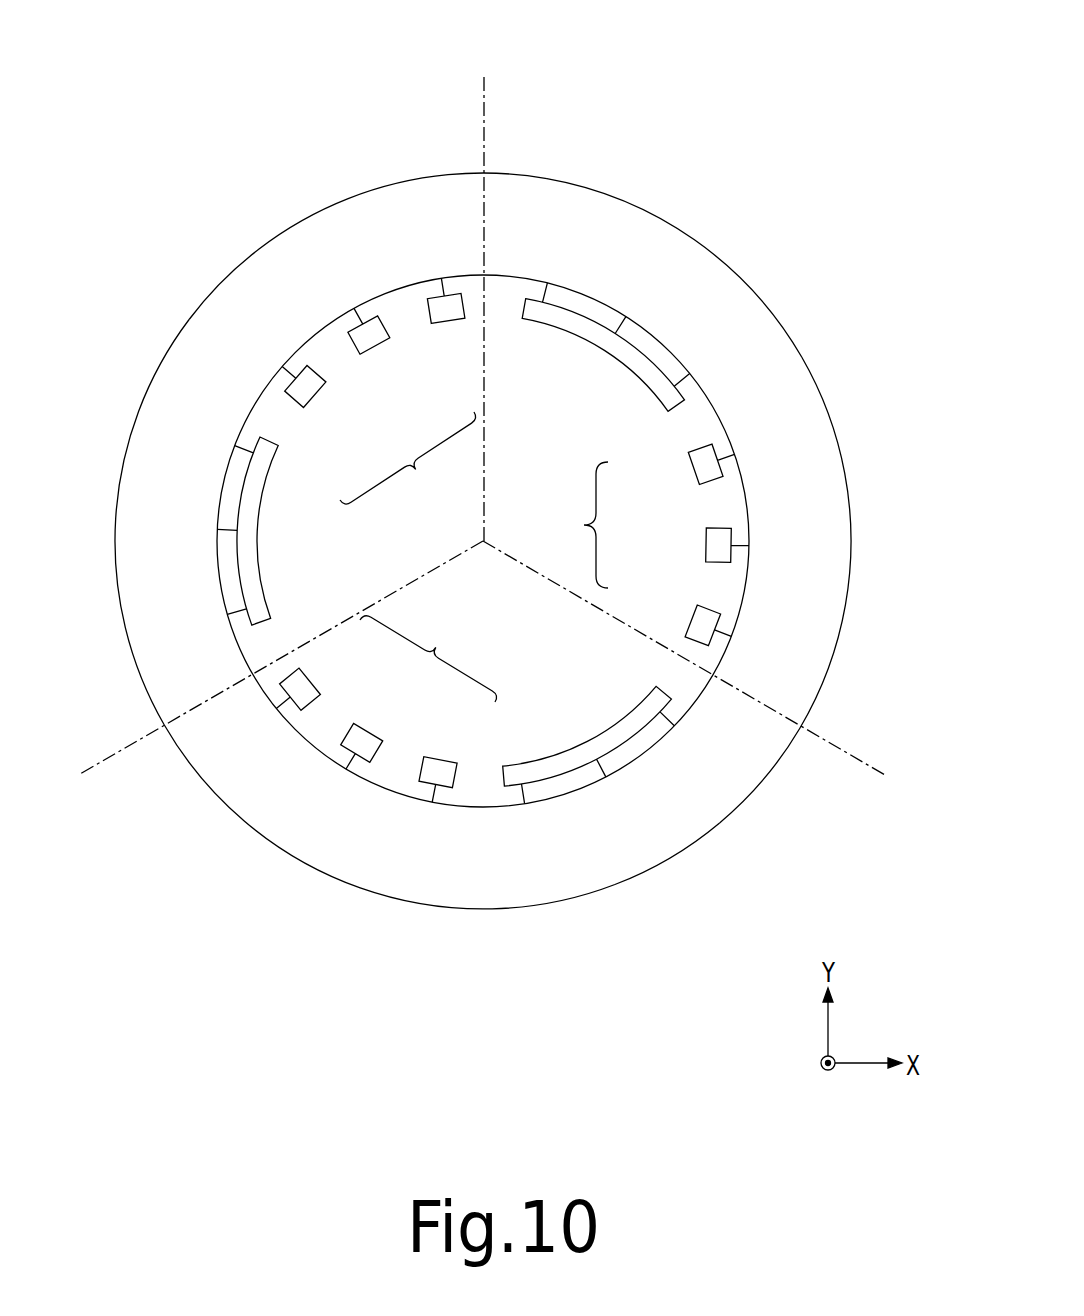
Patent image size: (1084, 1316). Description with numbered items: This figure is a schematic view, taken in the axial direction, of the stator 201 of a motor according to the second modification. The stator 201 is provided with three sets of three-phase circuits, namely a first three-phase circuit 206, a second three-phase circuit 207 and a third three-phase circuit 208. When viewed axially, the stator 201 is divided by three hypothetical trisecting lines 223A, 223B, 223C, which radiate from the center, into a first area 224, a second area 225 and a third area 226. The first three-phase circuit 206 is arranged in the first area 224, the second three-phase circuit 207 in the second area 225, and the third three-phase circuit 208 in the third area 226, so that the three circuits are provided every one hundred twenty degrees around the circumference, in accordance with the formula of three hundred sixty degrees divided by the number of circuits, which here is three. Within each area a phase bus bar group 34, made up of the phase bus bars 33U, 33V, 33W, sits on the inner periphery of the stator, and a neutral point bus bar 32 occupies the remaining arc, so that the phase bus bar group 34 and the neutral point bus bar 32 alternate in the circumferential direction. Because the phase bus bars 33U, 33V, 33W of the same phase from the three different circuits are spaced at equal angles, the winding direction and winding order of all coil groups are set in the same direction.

The stator 201 is at (780, 118).
The first three-phase circuit 206 is at (828, 395).
The second three-phase circuit 207 is at (655, 883).
The third three-phase circuit 208 is at (158, 332).
The first area 224 is at (792, 317).
The second area 225 is at (575, 910).
The third area 226 is at (197, 280).
The hypothetical trisecting line 223A is at (485, 118).
The hypothetical trisecting line 223B is at (845, 753).
The hypothetical trisecting line 223C is at (122, 755).
The neutral point bus bar 32 is at (258, 531).
The U-phase bus bar 33U is at (447, 324).
The V-phase bus bar 33V is at (372, 355).
The W-phase bus bar 33W is at (318, 402).
The phase bus bar group 34 is at (474, 557).